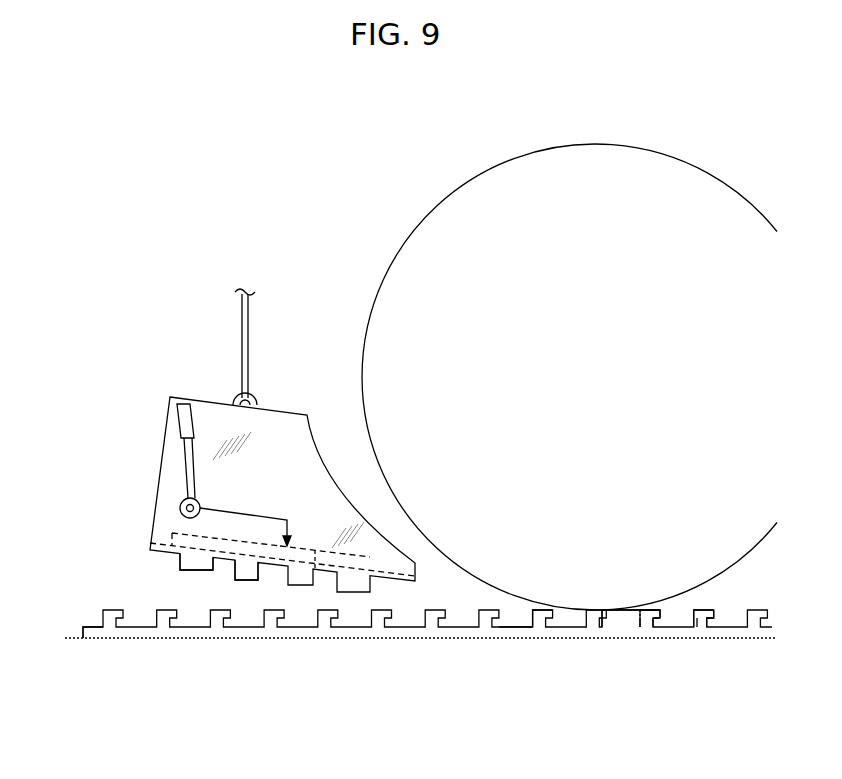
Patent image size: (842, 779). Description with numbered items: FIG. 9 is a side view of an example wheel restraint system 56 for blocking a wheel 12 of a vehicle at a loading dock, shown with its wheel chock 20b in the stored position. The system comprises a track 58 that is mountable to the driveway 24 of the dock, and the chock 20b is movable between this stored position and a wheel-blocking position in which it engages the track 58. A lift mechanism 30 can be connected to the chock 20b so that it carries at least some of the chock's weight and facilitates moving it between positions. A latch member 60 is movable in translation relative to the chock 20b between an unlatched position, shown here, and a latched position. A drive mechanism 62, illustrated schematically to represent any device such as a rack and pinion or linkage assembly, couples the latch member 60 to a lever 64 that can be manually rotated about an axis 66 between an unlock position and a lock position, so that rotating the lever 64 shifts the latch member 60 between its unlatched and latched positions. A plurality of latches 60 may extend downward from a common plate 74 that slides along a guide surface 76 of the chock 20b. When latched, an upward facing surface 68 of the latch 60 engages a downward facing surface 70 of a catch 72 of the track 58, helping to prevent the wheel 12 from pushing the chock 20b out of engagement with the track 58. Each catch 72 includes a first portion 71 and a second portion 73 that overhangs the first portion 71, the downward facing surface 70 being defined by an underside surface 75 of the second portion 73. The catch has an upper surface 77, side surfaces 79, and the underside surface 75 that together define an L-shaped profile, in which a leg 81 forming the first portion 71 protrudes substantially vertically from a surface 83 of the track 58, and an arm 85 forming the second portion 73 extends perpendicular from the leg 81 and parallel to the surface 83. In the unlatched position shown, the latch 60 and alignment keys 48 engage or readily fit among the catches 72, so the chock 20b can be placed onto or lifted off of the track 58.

The wheel 12 is at (376, 293).
The wheel chock 20b is at (160, 470).
The driveway 24 is at (70, 637).
The lift mechanism 30 is at (242, 340).
The alignment keys 48 is at (190, 571).
The wheel restraint system 56 is at (128, 336).
The track 58 is at (95, 626).
The latch member 60 is at (248, 580).
The drive mechanism 62 is at (257, 515).
The lever 64 is at (177, 429).
The axis 66 is at (180, 512).
The upward facing surface 68 is at (310, 560).
The downward facing surface 70 is at (323, 613).
The first portion 71 is at (707, 619).
The catch 72 is at (542, 609).
The second portion 73 is at (695, 609).
The common plate 74 is at (359, 556).
The underside surface 75 is at (636, 618).
The guide surface 76 is at (393, 566).
The upper surface 77 is at (648, 611).
The side surfaces 79 is at (640, 612).
The leg 81 is at (656, 625).
The surface 83 is at (517, 628).
The arm 85 is at (642, 616).